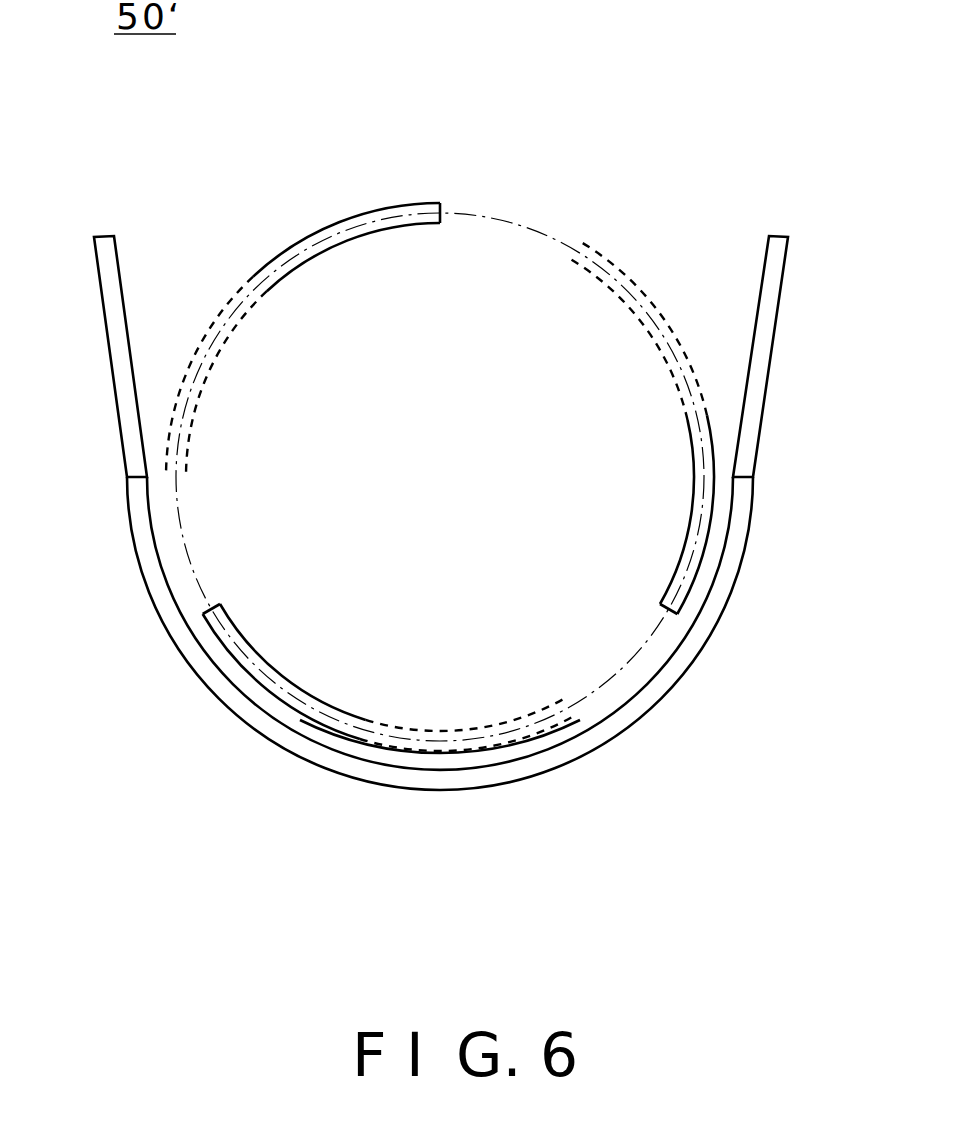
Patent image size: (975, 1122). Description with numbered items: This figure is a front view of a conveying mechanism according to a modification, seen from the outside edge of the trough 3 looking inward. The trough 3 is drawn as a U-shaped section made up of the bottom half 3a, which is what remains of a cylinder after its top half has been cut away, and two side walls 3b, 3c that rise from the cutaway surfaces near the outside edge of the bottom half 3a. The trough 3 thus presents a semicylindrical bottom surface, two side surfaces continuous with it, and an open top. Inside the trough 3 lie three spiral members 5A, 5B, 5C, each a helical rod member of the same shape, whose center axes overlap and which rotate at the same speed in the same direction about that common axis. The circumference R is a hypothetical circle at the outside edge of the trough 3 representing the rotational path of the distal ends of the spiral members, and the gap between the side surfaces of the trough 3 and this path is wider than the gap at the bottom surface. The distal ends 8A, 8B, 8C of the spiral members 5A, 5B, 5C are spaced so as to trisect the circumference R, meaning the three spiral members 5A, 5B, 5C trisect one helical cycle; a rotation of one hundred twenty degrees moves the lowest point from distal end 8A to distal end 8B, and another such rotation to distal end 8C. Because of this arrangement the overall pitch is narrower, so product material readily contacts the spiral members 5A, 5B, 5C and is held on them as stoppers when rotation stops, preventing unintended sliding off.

The trough 3 is at (748, 672).
The bottom half 3a is at (441, 790).
The side wall 3b is at (120, 357).
The side wall 3c is at (763, 362).
The spiral member 5A is at (322, 717).
The spiral member 5B is at (263, 285).
The spiral member 5C is at (697, 465).
The distal end 8A is at (219, 601).
The distal end 8B is at (446, 202).
The distal end 8C is at (652, 597).
The circumference R is at (520, 221).